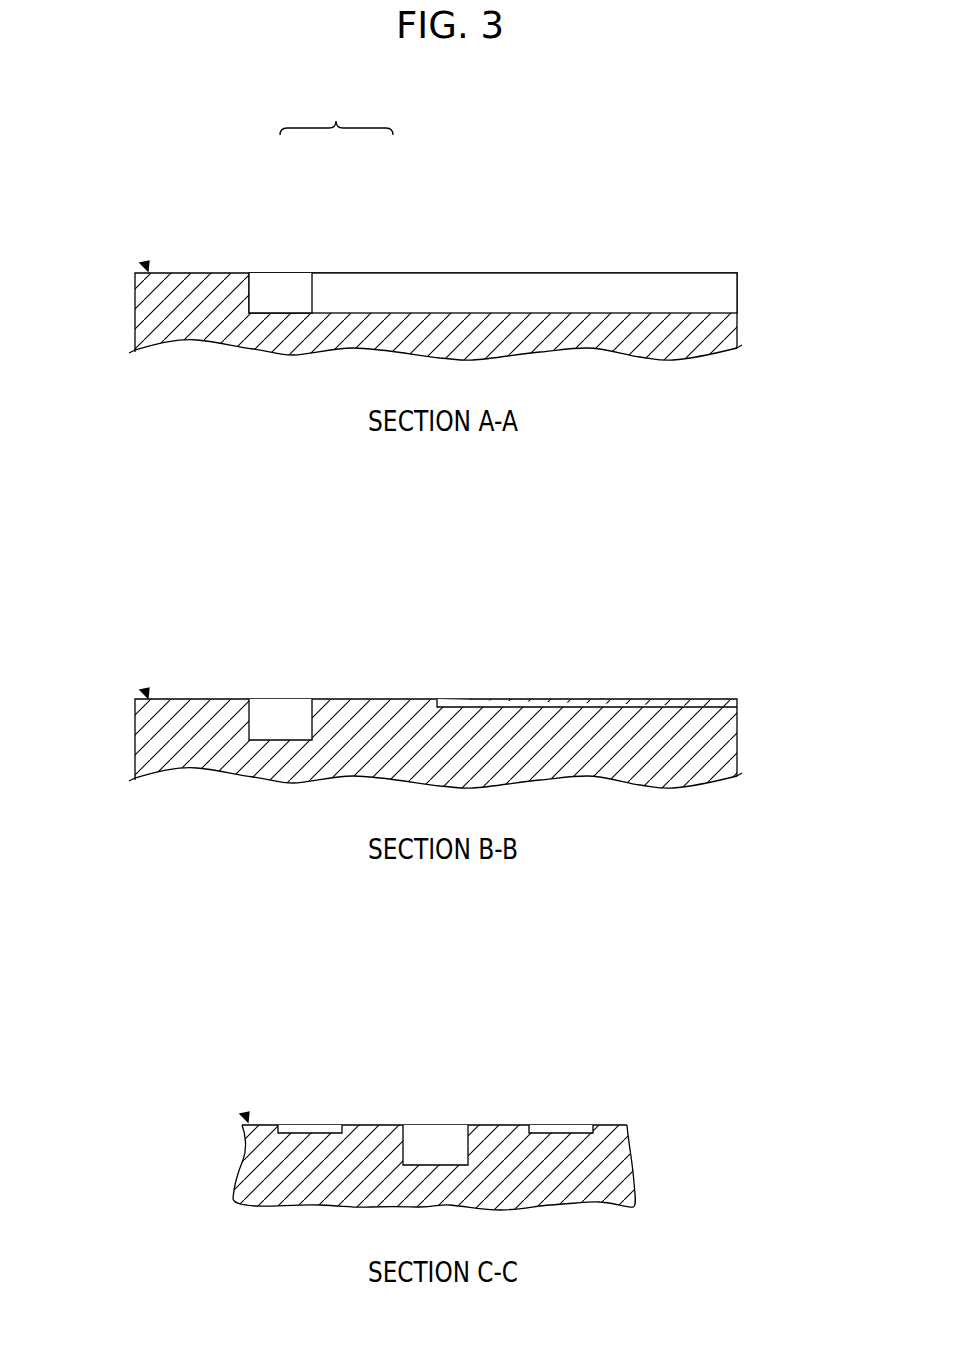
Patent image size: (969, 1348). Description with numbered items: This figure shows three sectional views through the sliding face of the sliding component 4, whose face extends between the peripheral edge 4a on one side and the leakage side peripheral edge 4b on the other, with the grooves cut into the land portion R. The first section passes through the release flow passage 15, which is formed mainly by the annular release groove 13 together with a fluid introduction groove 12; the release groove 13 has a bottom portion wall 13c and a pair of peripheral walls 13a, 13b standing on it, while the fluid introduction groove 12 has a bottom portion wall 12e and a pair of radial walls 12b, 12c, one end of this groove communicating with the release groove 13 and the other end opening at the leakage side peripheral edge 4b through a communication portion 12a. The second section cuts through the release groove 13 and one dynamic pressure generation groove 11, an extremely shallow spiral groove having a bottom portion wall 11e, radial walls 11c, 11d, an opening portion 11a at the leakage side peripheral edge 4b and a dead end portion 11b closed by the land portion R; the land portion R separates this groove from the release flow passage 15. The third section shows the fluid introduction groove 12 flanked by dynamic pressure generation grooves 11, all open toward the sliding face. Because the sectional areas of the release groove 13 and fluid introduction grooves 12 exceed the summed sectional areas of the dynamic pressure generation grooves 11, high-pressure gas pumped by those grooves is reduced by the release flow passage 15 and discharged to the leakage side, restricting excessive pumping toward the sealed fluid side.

The workpiece body 4 is at (147, 268).
The first side surface of body 4a is at (135, 317).
The leakage side peripheral edge 4b is at (737, 330).
The land portion R is at (196, 272).
The dynamic pressure generation groove 11 is at (556, 698).
The opening portion 11a is at (737, 699).
The dead end portion 11b is at (437, 705).
The radial wall 11c is at (540, 1125).
The radial wall 11d is at (582, 1125).
The bottom portion wall 11e is at (590, 706).
The fluid introduction groove 12 is at (362, 272).
The communication portion 12a is at (737, 290).
The radial wall 12b is at (455, 1125).
The radial wall 12c is at (418, 1125).
The bottom portion wall 12e is at (525, 312).
The release groove 13 is at (302, 272).
The peripheral wall 13a is at (305, 698).
The peripheral wall 13b is at (256, 295).
The bottom portion wall 13c is at (290, 312).
The release flow passage 15 is at (336, 107).